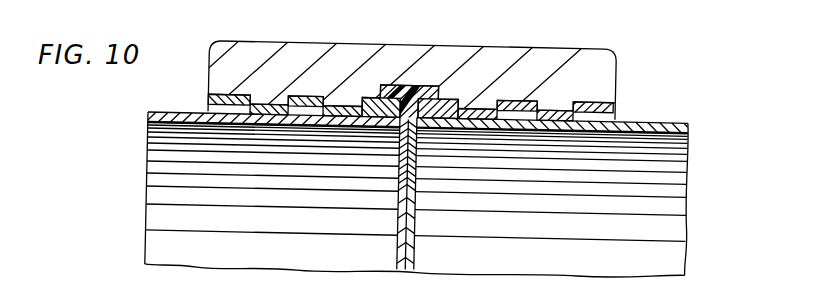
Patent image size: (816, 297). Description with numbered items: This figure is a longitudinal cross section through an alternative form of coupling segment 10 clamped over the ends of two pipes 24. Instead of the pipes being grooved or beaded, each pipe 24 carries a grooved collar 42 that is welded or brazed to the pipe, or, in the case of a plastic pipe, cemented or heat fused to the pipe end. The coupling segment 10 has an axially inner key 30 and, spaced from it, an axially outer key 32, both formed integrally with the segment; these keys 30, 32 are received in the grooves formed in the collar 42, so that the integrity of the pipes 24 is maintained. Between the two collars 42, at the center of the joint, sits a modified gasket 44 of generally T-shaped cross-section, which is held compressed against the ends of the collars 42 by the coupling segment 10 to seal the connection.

The coupling segment 10 is at (501, 17).
The pipe 24 is at (182, 112).
The axially inner key 30 is at (338, 110).
The axially outer key 32 is at (263, 106).
The grooved collar 42 is at (384, 118).
The gasket 44 is at (405, 85).